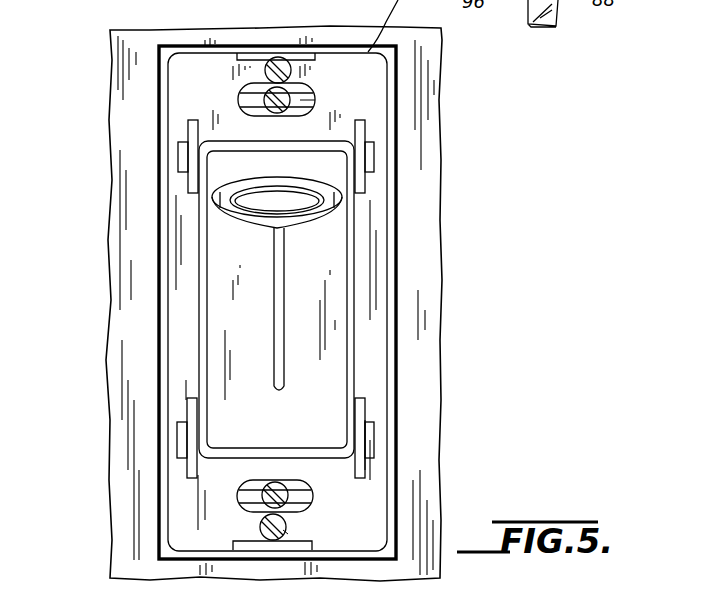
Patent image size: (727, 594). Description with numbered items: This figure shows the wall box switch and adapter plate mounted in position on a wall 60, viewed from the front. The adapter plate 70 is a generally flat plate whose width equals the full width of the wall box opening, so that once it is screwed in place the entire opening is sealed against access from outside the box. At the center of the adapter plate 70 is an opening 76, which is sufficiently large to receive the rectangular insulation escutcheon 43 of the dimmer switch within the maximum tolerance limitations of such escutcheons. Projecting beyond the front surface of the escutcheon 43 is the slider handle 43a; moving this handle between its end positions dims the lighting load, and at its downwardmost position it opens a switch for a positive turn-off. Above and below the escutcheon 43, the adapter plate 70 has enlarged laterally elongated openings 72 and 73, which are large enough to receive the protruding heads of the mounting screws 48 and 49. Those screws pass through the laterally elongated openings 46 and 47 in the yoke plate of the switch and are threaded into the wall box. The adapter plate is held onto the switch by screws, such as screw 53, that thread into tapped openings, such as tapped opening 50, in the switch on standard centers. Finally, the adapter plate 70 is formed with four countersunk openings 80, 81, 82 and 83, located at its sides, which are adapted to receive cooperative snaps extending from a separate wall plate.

The wall 60 is at (123, 298).
The adapter plate 70 is at (157, 345).
The opening 76 is at (368, 362).
The tapped opening 50 is at (297, 68).
The mounting screw 48 is at (253, 82).
The laterally elongated opening 46 is at (316, 92).
The enlarged laterally elongated opening 72 is at (243, 98).
The enlarged laterally elongated opening 73 is at (243, 495).
The laterally elongated opening 47 is at (300, 507).
The mounting screw 49 is at (253, 515).
The screw 53 is at (287, 528).
The opening 80 is at (180, 158).
The opening 82 is at (372, 153).
The opening 81 is at (180, 438).
The opening 83 is at (372, 435).
The insulation escutcheon 43 is at (320, 317).
The slider handle 43a is at (340, 205).